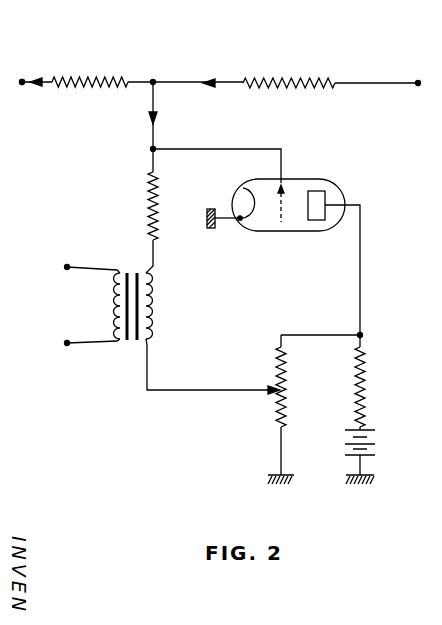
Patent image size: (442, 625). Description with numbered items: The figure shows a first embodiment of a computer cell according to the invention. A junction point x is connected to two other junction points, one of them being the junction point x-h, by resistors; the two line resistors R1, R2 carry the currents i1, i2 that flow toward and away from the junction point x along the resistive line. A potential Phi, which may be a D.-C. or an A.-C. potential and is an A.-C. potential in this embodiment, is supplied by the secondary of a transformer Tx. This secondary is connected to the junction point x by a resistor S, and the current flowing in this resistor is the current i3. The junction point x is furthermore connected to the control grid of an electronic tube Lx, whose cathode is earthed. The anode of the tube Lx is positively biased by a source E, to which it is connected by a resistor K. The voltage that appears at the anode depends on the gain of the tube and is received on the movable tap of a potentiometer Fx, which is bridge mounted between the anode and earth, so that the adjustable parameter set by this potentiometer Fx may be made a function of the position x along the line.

The junction point x−h x-h is at (15, 73).
The current i1 is at (41, 67).
The resistor R(x−h/2) R1 is at (111, 59).
The junction point x is at (151, 73).
The current i2 is at (217, 73).
The resistor R(x+h/2) R2 is at (312, 59).
The current i3 is at (162, 125).
The resistor S is at (168, 206).
The electronic tube L Lx is at (300, 178).
The transformer Tx is at (129, 340).
The potential Φ(x) Phi is at (153, 312).
The potentiometer Fx is at (287, 392).
The resistor K is at (366, 392).
The source E is at (372, 455).